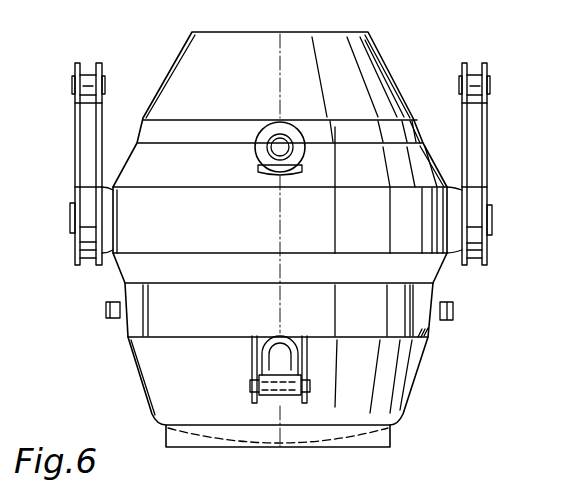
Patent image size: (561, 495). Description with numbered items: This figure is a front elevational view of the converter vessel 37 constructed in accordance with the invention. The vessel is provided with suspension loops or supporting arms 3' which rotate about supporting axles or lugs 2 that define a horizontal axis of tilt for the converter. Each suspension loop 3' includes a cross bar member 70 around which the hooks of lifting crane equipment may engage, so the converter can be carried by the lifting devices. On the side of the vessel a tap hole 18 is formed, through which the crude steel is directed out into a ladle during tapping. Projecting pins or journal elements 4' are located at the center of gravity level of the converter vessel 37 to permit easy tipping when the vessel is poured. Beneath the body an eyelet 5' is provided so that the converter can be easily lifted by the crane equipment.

The converter vessel 37 is at (375, 72).
The cross bar members 70 is at (475, 82).
The suspension loops or supporting arms 3' is at (495, 164).
The supporting axles or lugs 2 is at (490, 203).
The tap hole 18 is at (283, 147).
The projecting pins or journal elements 4' is at (473, 313).
The eyelets 5' is at (303, 369).